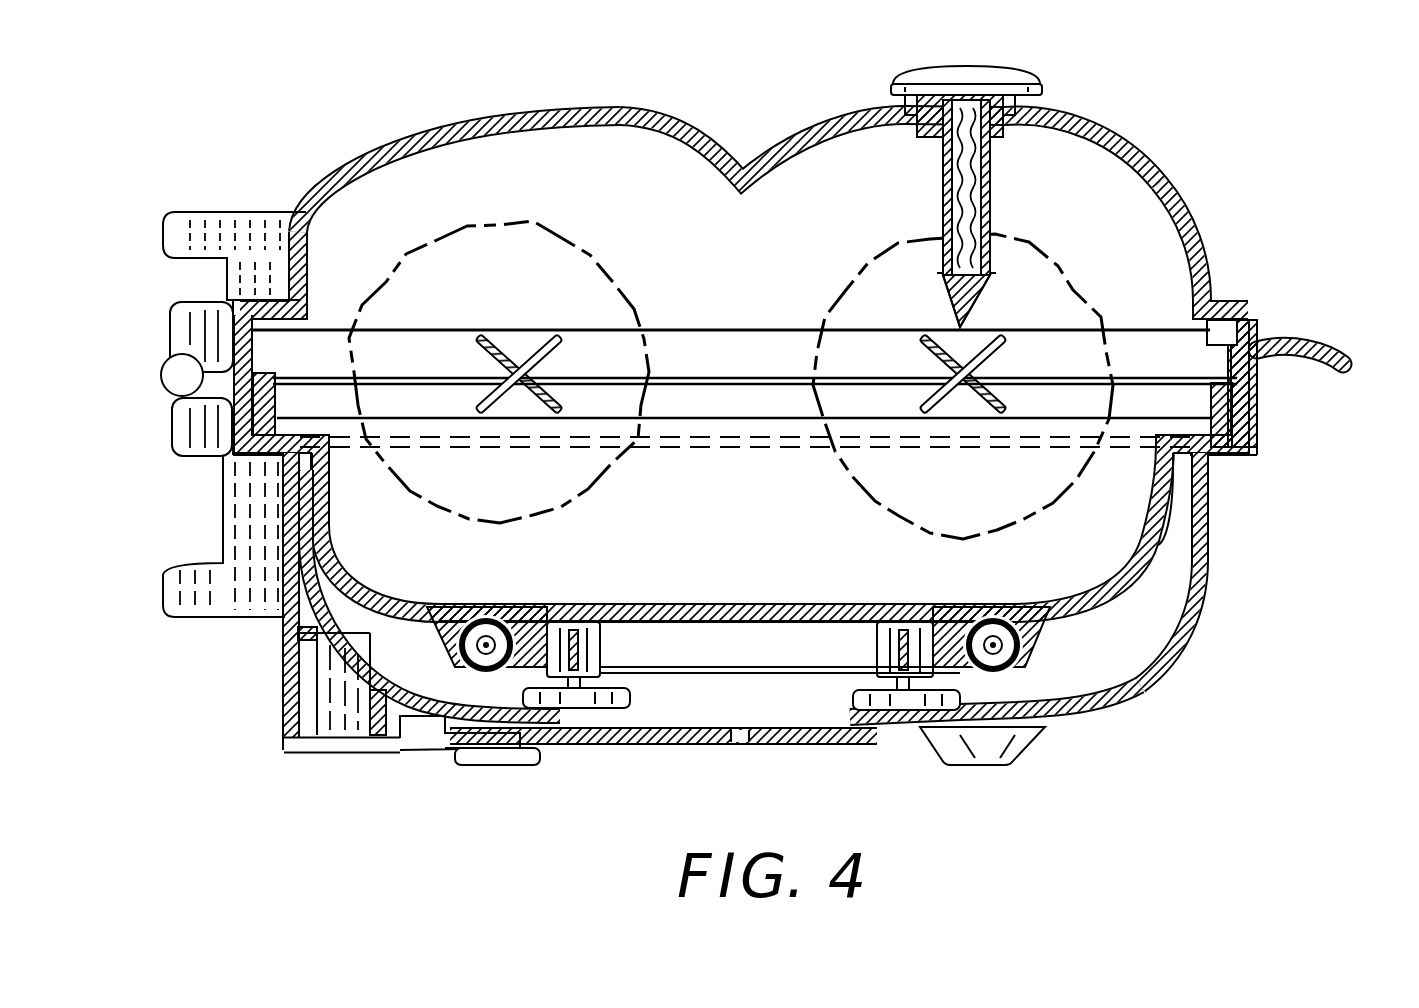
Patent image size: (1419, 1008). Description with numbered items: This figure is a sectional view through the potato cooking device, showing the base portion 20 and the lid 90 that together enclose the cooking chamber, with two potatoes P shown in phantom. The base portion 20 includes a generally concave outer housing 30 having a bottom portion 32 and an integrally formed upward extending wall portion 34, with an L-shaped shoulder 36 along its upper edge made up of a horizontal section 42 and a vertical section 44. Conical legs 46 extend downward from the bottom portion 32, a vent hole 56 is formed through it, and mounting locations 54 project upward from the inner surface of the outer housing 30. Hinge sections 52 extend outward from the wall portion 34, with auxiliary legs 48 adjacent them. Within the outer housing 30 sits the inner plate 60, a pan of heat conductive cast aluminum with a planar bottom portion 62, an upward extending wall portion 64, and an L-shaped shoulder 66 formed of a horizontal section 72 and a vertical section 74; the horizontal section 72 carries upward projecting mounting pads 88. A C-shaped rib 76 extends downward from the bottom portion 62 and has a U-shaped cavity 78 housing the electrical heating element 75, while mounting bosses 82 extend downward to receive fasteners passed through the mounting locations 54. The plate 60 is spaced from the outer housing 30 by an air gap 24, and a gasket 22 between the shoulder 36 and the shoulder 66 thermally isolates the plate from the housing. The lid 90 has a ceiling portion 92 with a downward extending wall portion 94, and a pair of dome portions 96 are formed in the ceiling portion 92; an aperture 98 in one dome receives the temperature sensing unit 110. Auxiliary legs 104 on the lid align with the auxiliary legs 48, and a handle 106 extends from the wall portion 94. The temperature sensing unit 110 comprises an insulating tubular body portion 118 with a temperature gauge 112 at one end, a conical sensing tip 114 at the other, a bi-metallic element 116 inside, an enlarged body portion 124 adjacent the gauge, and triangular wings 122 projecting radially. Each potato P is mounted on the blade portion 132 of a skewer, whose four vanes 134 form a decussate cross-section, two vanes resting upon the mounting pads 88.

The base portion 20 is at (1210, 605).
The gasket 22 is at (1262, 445).
The air gap 24 is at (1150, 615).
The outer housing 30 is at (1130, 693).
The bottom portion 32 is at (660, 745).
The wall portion 34 is at (250, 527).
The L-shaped shoulder 36 is at (222, 423).
The horizontal section 42 is at (245, 475).
The vertical section 44 is at (215, 400).
The conical legs 46 is at (478, 752).
The auxiliary legs 48 is at (250, 605).
The hinge sections 52 is at (175, 372).
The mounting locations 54 is at (592, 710).
The vent hole 56 is at (740, 745).
The inner plate 60 is at (592, 600).
The bottom portion 62 is at (703, 605).
The wall portion 64 is at (1150, 545).
The L-shaped shoulder 66 is at (278, 420).
The horizontal section 72 is at (335, 430).
The vertical section 74 is at (305, 340).
The electrical heating element 75 is at (485, 650).
The C-shaped rib 76 is at (780, 660).
The U-shaped cavity 78 is at (1005, 668).
The mounting bosses 82 is at (565, 620).
The mounting pads 88 is at (520, 405).
The lid 90 is at (1190, 195).
The ceiling portion 92 is at (688, 138).
The wall portion 94 is at (306, 282).
The dome portions 96 is at (490, 120).
The aperture 98 is at (938, 117).
The auxiliary legs 104 is at (258, 222).
The handle 106 is at (1325, 350).
The temperature sensing unit 110 is at (930, 190).
The temperature gauge 112 is at (1000, 70).
The temperature sensing tip 114 is at (990, 322).
The bi-metallic element 116 is at (990, 205).
The tubular body portion 118 is at (985, 165).
The wings 122 is at (940, 300).
The enlarged body portion 124 is at (893, 100).
The blade portion 132 is at (515, 338).
The vanes 134 is at (560, 345).
The potato P is at (478, 205).